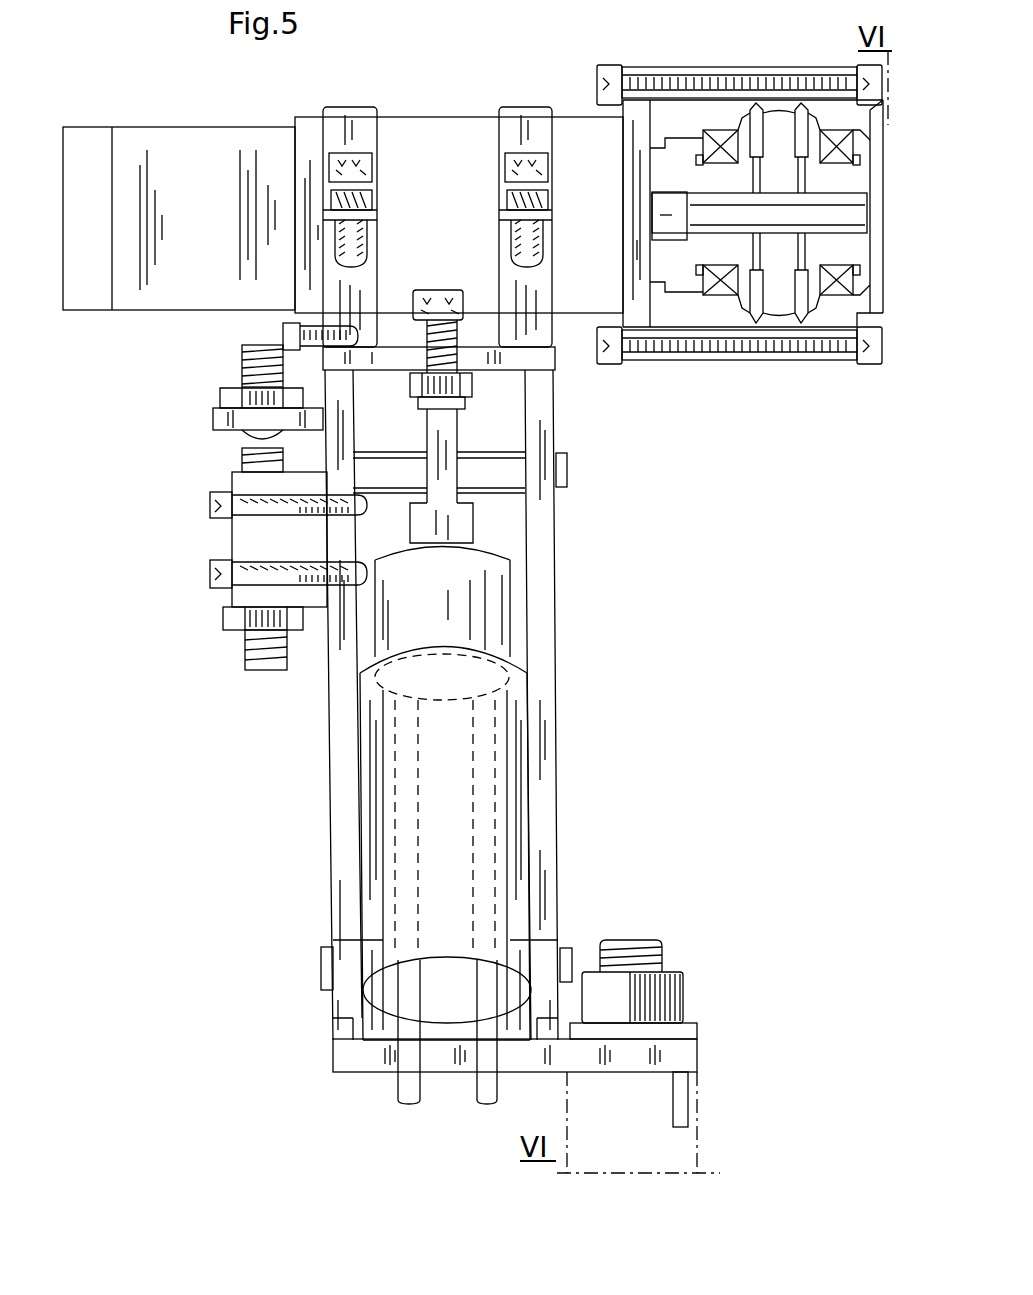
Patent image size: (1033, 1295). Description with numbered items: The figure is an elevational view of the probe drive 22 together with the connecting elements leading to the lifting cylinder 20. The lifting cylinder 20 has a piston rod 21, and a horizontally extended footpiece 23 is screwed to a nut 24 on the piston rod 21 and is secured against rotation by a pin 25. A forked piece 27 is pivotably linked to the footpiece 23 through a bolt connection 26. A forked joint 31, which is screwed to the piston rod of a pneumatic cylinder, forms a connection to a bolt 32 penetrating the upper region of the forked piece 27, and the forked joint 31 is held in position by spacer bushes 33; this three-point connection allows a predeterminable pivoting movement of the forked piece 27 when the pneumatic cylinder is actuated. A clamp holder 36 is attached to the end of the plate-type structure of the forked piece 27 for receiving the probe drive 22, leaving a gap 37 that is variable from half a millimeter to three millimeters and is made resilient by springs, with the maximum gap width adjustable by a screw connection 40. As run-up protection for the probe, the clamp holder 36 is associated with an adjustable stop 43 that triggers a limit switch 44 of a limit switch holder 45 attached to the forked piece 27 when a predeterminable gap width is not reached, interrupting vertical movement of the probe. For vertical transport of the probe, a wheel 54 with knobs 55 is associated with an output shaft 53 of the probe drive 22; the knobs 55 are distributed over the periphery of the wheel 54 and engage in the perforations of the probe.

The lifting cylinder 20 is at (665, 1151).
The piston rod 21 is at (660, 956).
The probe drive 22 is at (598, 167).
The footpiece 23 is at (360, 1058).
The nut 24 is at (668, 1001).
The pin 25 is at (680, 1086).
The bolt connection 26 is at (572, 950).
The forked piece 27 is at (542, 607).
The forked joint 31 is at (460, 517).
The bolt 32 is at (392, 486).
The spacer bushes 33 is at (398, 508).
The clamp holder 36 is at (538, 281).
The gap 37 is at (551, 346).
The screw connection 40 is at (462, 370).
The adjustable stop 43 is at (192, 411).
The limit switch 44 is at (245, 649).
The limit switch holder 45 is at (247, 531).
The output shaft 53 is at (737, 207).
The wheel 54 is at (719, 363).
The knobs 55 is at (757, 364).